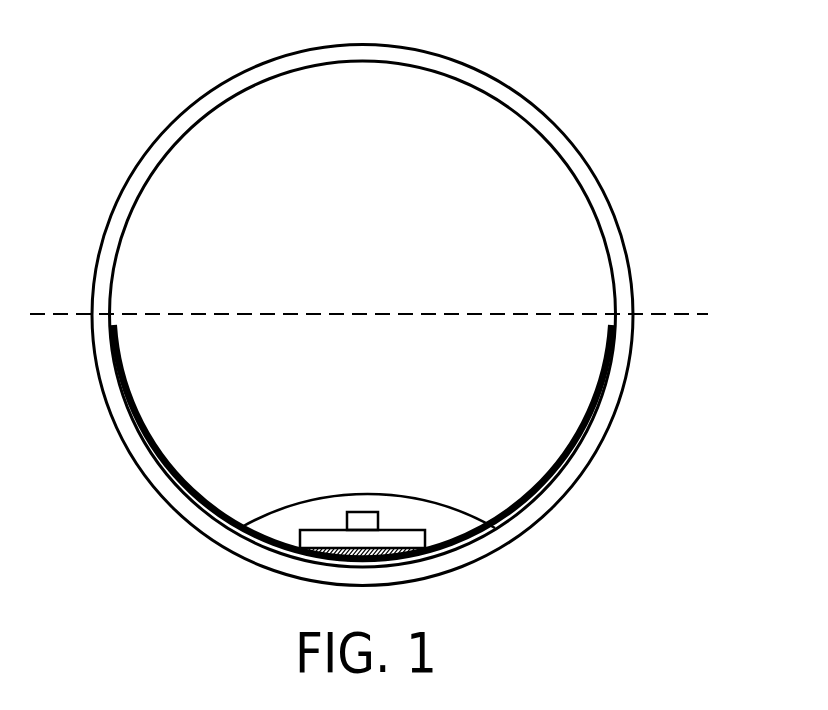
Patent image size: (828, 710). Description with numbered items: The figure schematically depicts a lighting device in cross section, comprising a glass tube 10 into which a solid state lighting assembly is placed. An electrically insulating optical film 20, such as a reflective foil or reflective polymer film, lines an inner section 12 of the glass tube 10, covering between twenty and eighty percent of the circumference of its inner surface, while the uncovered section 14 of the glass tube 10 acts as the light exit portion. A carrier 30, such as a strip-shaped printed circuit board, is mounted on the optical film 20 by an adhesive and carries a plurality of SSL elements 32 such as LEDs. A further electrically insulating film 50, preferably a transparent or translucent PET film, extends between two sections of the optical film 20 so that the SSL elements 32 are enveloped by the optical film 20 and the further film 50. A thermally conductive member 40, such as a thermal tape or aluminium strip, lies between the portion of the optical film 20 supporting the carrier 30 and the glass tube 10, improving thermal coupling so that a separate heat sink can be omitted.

The glass tube 10 is at (618, 221).
The inner section 12 is at (113, 393).
The uncovered section 14 is at (113, 233).
The optical film 20 is at (607, 386).
The carrier 30 is at (322, 537).
The SSL elements 32 is at (365, 521).
The thermally conductive member 40 is at (403, 543).
The further electrically insulating film 50 is at (447, 508).